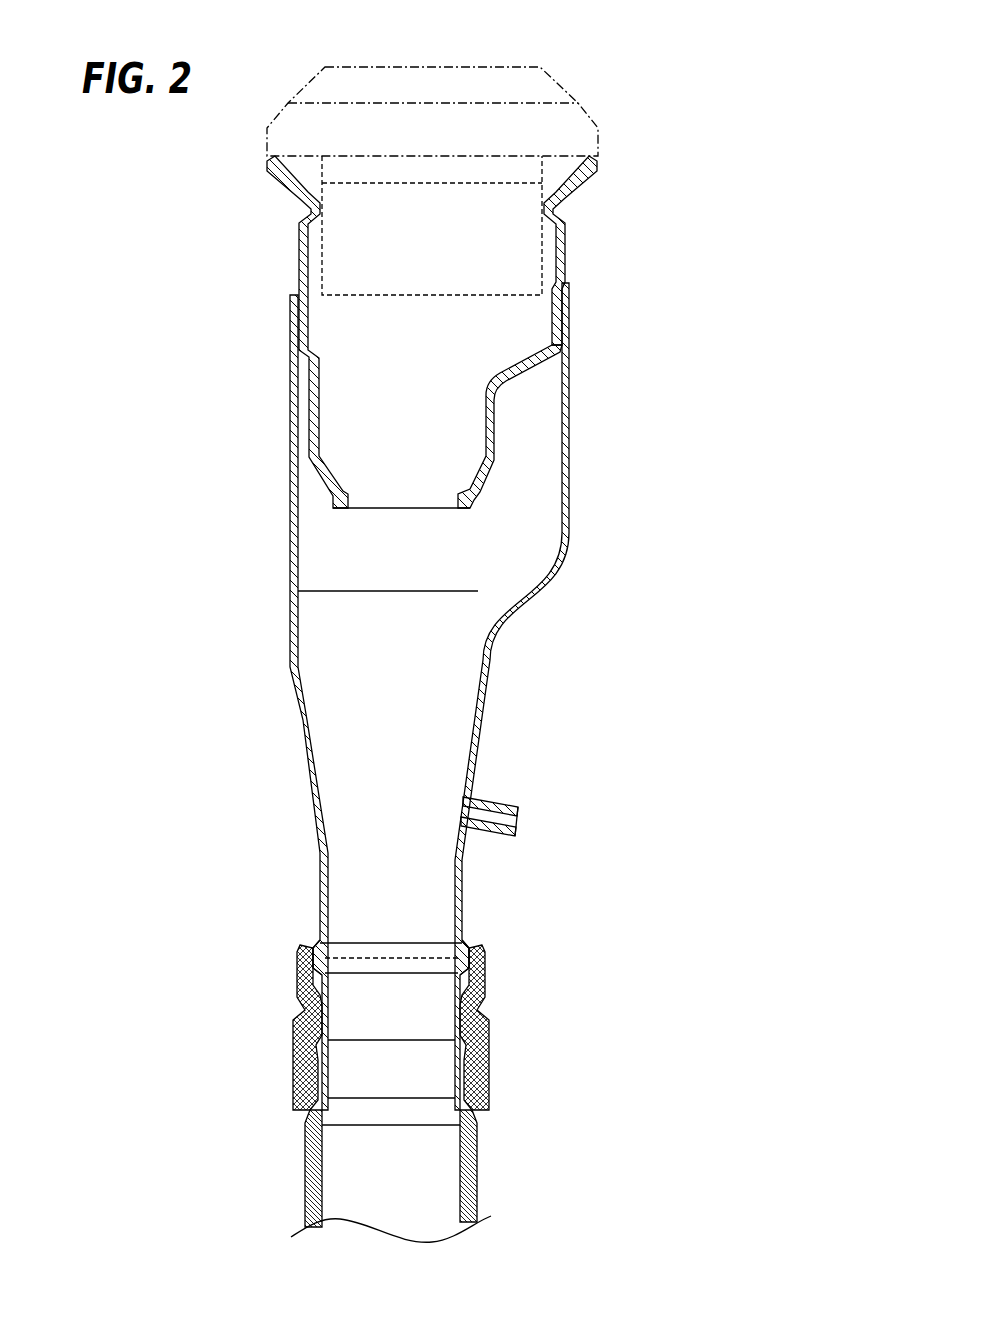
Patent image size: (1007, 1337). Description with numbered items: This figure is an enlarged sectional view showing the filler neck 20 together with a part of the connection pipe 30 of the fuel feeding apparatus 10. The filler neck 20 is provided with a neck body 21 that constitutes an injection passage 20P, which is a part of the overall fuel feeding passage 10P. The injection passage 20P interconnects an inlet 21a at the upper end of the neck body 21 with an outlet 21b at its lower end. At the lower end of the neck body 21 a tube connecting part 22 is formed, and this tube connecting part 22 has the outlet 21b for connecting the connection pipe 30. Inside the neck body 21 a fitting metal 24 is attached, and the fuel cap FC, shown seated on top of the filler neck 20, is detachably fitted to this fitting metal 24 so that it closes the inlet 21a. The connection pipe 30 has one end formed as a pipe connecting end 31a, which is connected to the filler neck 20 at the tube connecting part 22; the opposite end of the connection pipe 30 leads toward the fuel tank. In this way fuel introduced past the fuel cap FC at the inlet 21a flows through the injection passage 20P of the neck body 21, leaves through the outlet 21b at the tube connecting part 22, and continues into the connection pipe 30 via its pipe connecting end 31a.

The syringe body / pressure-resistant container 10 is at (688, 147).
The fuel cap FC is at (573, 102).
The inlet 21a is at (520, 210).
The filler neck 20 is at (514, 332).
The neck body 21 is at (566, 425).
The fitting metal 24 is at (565, 345).
The injection passage 20P is at (443, 348).
The fuel feeding passage 10P is at (418, 753).
The tube connecting part 22 is at (485, 972).
The pipe connecting end 31a is at (488, 1025).
The outlet 21b is at (395, 1128).
The connection pipe 30 is at (478, 1183).